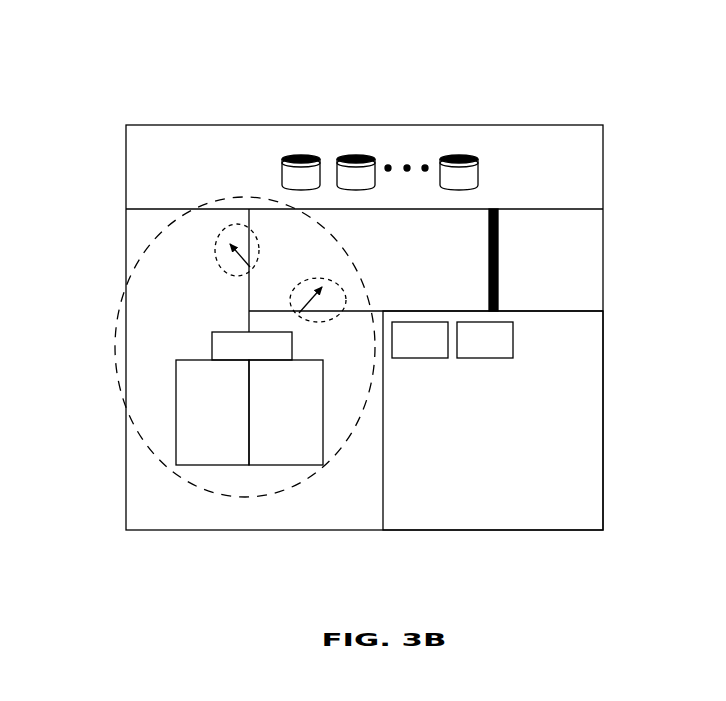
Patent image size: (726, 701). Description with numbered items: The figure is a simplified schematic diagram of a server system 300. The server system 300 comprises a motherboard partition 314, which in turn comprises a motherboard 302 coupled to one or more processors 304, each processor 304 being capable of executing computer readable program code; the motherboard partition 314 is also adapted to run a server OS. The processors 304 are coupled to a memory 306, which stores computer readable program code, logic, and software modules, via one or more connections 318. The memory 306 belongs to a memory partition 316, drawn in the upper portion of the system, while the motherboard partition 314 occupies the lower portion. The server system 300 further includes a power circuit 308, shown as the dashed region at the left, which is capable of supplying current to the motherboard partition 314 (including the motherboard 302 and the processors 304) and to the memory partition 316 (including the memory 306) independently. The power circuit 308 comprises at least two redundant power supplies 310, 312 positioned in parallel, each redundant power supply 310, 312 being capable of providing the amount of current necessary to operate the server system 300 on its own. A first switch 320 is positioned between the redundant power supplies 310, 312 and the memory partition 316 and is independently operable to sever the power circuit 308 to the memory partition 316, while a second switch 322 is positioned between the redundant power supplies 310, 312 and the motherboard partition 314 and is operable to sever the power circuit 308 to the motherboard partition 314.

The server system 300 is at (201, 83).
The motherboard 302 is at (493, 420).
The processor 304 is at (452, 340).
The memory 306 is at (303, 155).
The power circuit 308 is at (151, 243).
The redundant power supply 310 is at (234, 398).
The redundant power supply 312 is at (286, 412).
The motherboard partition 314 is at (620, 449).
The memory partition 316 is at (624, 167).
The connection 318 is at (498, 257).
The first switch 320 is at (259, 243).
The second switch 322 is at (338, 279).